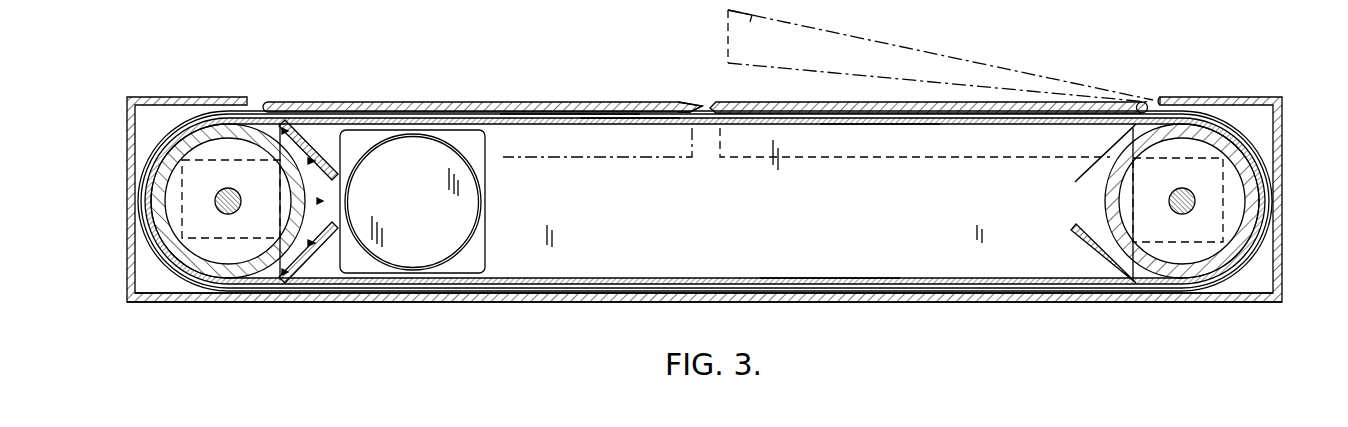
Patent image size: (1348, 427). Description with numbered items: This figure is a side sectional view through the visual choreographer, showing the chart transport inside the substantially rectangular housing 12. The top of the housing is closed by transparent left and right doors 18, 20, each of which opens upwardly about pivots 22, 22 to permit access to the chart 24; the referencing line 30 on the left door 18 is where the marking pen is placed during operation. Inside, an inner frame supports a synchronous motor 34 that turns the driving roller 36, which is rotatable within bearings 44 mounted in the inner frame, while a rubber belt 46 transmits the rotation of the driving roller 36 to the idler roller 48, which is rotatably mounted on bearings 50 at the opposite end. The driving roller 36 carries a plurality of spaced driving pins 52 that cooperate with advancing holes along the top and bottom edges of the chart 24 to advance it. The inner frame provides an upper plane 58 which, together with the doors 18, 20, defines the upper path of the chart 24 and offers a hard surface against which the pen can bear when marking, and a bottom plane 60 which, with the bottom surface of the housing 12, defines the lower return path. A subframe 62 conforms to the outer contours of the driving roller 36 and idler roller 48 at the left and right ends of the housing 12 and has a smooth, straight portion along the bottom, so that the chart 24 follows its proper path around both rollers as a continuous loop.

The housing 12 is at (1253, 100).
The left door 18 is at (475, 103).
The right door 20 is at (760, 102).
The pivot 22 is at (1194, 110).
The chart 24 is at (565, 113).
The referencing line 30 is at (693, 104).
The synchronous motor 34 is at (465, 217).
The driving roller 36 is at (157, 226).
The bearings 44 is at (241, 202).
The rubber belt 46 is at (625, 118).
The idler roller 48 is at (1258, 216).
The bearings 50 is at (1169, 212).
The driving pins 52 is at (312, 201).
The upper plane 58 is at (878, 128).
The bottom plane 60 is at (833, 277).
The subframe 62 is at (553, 292).